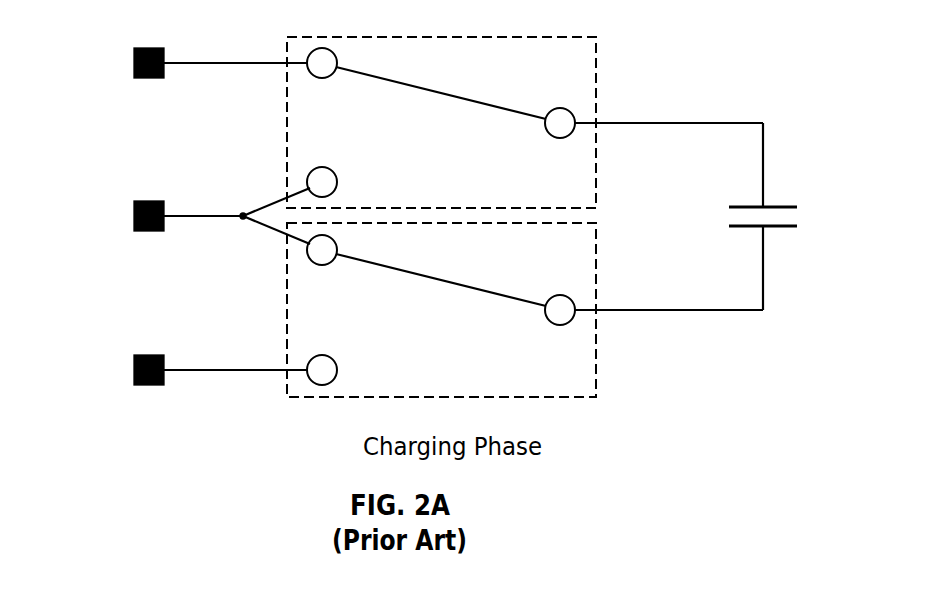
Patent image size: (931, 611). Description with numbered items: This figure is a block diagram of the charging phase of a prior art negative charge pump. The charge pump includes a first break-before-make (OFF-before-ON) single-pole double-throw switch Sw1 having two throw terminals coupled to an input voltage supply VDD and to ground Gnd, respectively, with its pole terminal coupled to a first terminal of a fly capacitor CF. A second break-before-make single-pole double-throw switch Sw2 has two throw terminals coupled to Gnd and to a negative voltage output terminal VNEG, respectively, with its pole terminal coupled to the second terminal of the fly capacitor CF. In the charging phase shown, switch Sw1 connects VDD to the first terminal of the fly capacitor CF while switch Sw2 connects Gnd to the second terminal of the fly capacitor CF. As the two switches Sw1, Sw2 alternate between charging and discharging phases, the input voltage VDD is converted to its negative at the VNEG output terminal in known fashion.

The first break-before-make SPDT switch Sw1 is at (441, 122).
The second break-before-make SPDT switch Sw2 is at (441, 310).
The fly capacitor CF is at (686, 216).
The input voltage supply VDD is at (193, 65).
The ground Gnd is at (194, 216).
The negative voltage output terminal VNEG is at (191, 369).